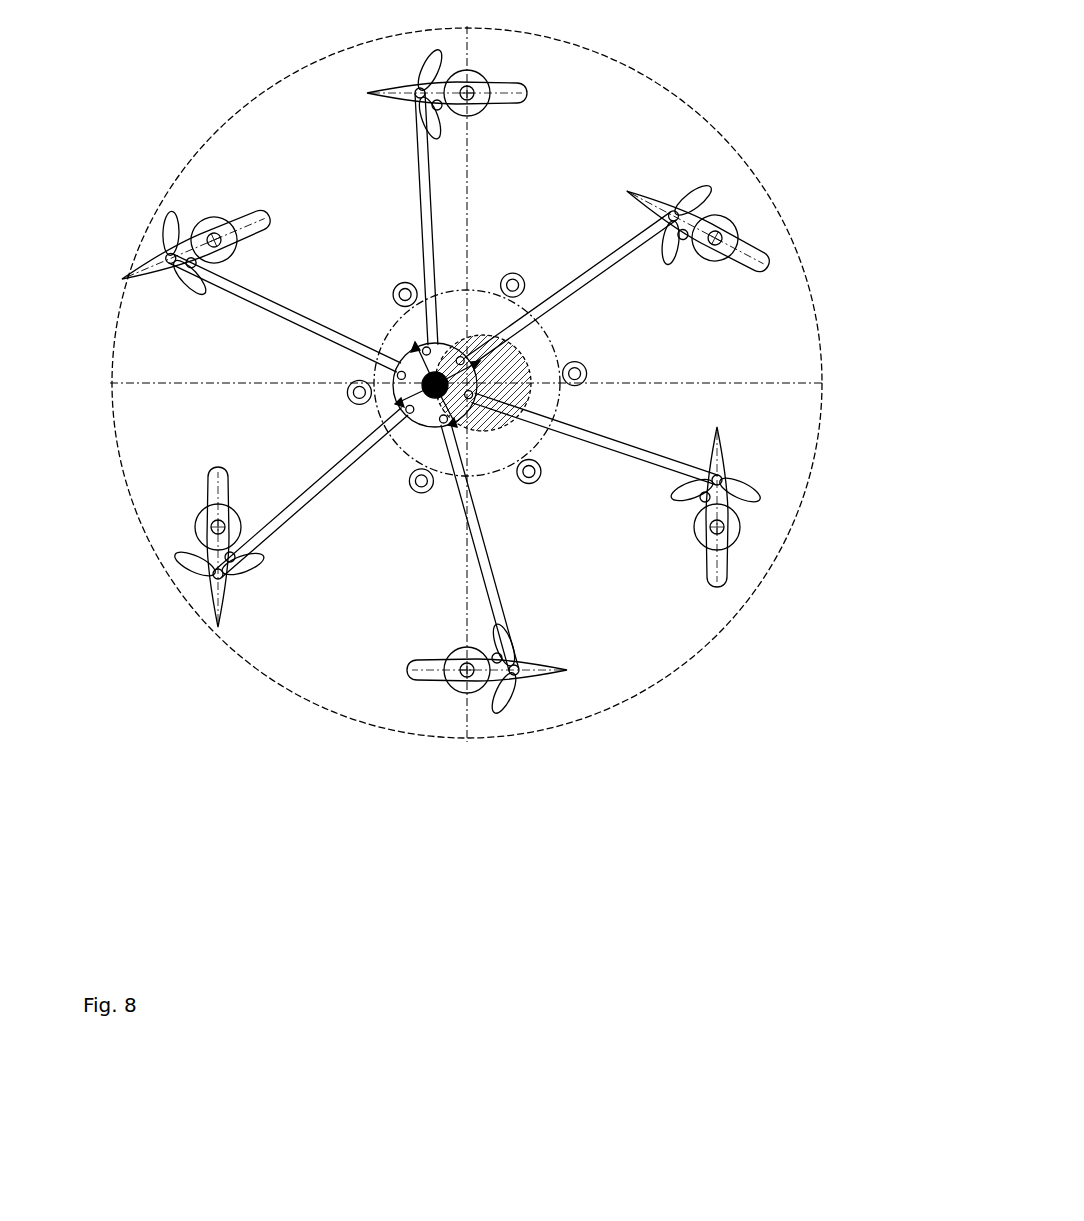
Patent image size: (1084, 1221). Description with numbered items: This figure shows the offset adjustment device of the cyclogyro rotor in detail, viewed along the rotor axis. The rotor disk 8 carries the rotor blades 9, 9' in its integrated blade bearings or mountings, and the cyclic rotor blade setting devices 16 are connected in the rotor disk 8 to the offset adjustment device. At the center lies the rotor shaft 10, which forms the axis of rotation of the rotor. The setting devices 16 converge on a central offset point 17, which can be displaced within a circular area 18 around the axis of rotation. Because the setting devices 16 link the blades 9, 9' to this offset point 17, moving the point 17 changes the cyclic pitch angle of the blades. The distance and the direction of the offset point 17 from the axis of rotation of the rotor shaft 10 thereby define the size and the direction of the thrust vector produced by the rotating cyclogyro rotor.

The rotor disk 8 is at (797, 316).
The rotor blade 9 is at (769, 578).
The rotor blade 9' is at (495, 733).
The rotor shaft 10 is at (487, 405).
The cyclic rotor blade setting device 16 is at (285, 513).
The central offset point 17 is at (425, 387).
The circular area 18 is at (497, 352).